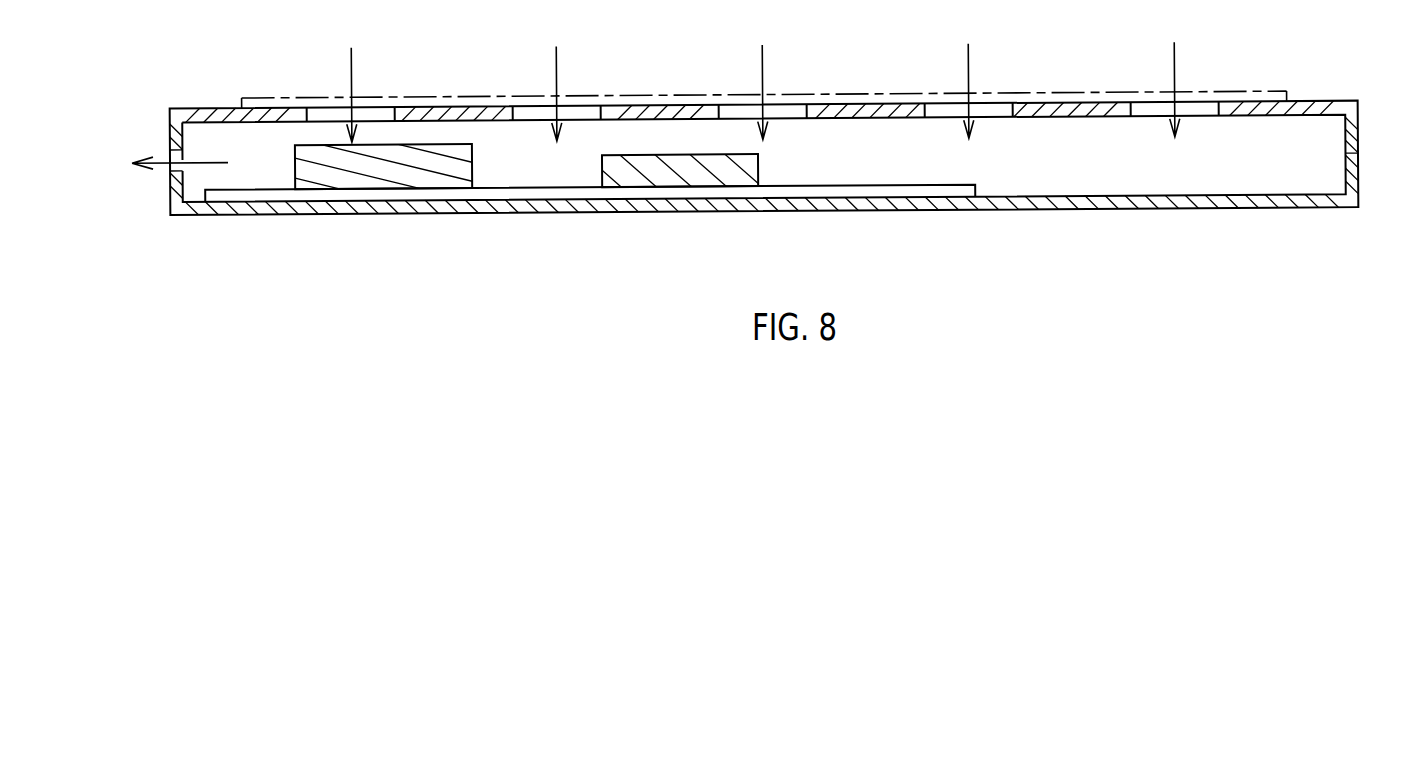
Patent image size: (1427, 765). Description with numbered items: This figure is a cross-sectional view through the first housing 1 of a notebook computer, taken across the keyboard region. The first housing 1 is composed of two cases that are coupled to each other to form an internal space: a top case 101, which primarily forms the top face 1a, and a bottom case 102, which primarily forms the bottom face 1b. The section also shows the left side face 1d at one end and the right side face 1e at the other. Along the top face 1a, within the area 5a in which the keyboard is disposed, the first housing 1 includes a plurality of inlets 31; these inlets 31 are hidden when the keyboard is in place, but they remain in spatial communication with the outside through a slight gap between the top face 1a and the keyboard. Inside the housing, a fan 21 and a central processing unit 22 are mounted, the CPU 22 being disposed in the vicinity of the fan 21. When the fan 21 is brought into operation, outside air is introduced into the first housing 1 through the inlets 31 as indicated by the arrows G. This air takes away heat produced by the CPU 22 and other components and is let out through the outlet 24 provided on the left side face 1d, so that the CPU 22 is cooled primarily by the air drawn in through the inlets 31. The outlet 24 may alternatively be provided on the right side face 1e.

The first housing 1 is at (1360, 105).
The top face 1a is at (1322, 92).
The bottom face 1b is at (1204, 223).
The left side face 1d is at (153, 123).
The right side face 1e is at (1359, 153).
The top case 101 is at (210, 117).
The bottom case 102 is at (208, 214).
The fan 21 is at (383, 181).
The central processing unit 22 is at (668, 177).
The outlet 24 is at (168, 171).
The area for disposing the keyboard 5a is at (267, 98).
The inlets 31 is at (379, 117).
The arrows G is at (352, 70).